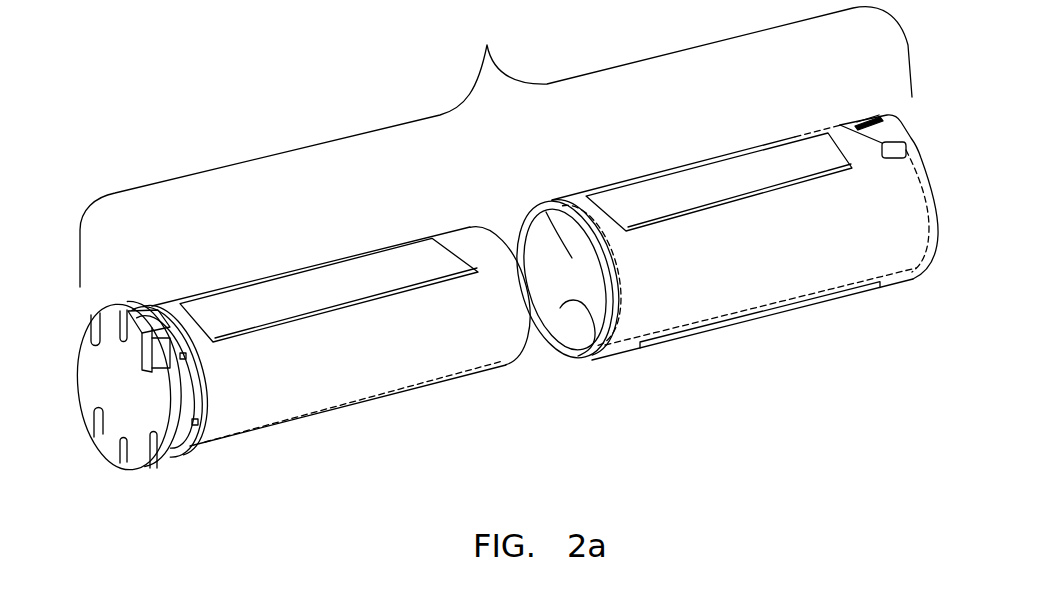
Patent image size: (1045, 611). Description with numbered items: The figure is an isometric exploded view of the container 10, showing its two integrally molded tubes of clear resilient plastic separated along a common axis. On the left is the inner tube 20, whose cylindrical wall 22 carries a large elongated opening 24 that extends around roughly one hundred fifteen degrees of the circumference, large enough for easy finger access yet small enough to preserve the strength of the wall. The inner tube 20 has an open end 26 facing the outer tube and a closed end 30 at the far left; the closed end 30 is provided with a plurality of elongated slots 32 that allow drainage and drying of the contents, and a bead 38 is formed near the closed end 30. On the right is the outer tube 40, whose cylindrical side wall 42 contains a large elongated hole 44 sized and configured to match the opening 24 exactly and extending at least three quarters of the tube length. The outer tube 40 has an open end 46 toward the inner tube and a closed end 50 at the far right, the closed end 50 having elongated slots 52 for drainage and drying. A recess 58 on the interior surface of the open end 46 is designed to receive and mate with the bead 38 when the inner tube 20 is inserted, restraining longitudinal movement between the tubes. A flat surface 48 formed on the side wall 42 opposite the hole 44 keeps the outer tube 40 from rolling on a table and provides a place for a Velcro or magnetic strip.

The container 10 is at (101, 300).
The inner tube 20 is at (326, 413).
The cylindrical wall 22 is at (423, 353).
The elongated opening 24 is at (280, 292).
The open end 26 is at (522, 325).
The closed end 30 is at (153, 420).
The elongated slots 32 is at (93, 422).
The bead 38 is at (152, 302).
The outer tube 40 is at (898, 292).
The cylindrical side wall 42 is at (907, 243).
The elongated hole 44 is at (730, 182).
The open end 46 is at (594, 272).
The flat surface 48 is at (713, 332).
The closed end 50 is at (888, 135).
The elongated slots 52 is at (880, 150).
The recess 58 is at (590, 328).